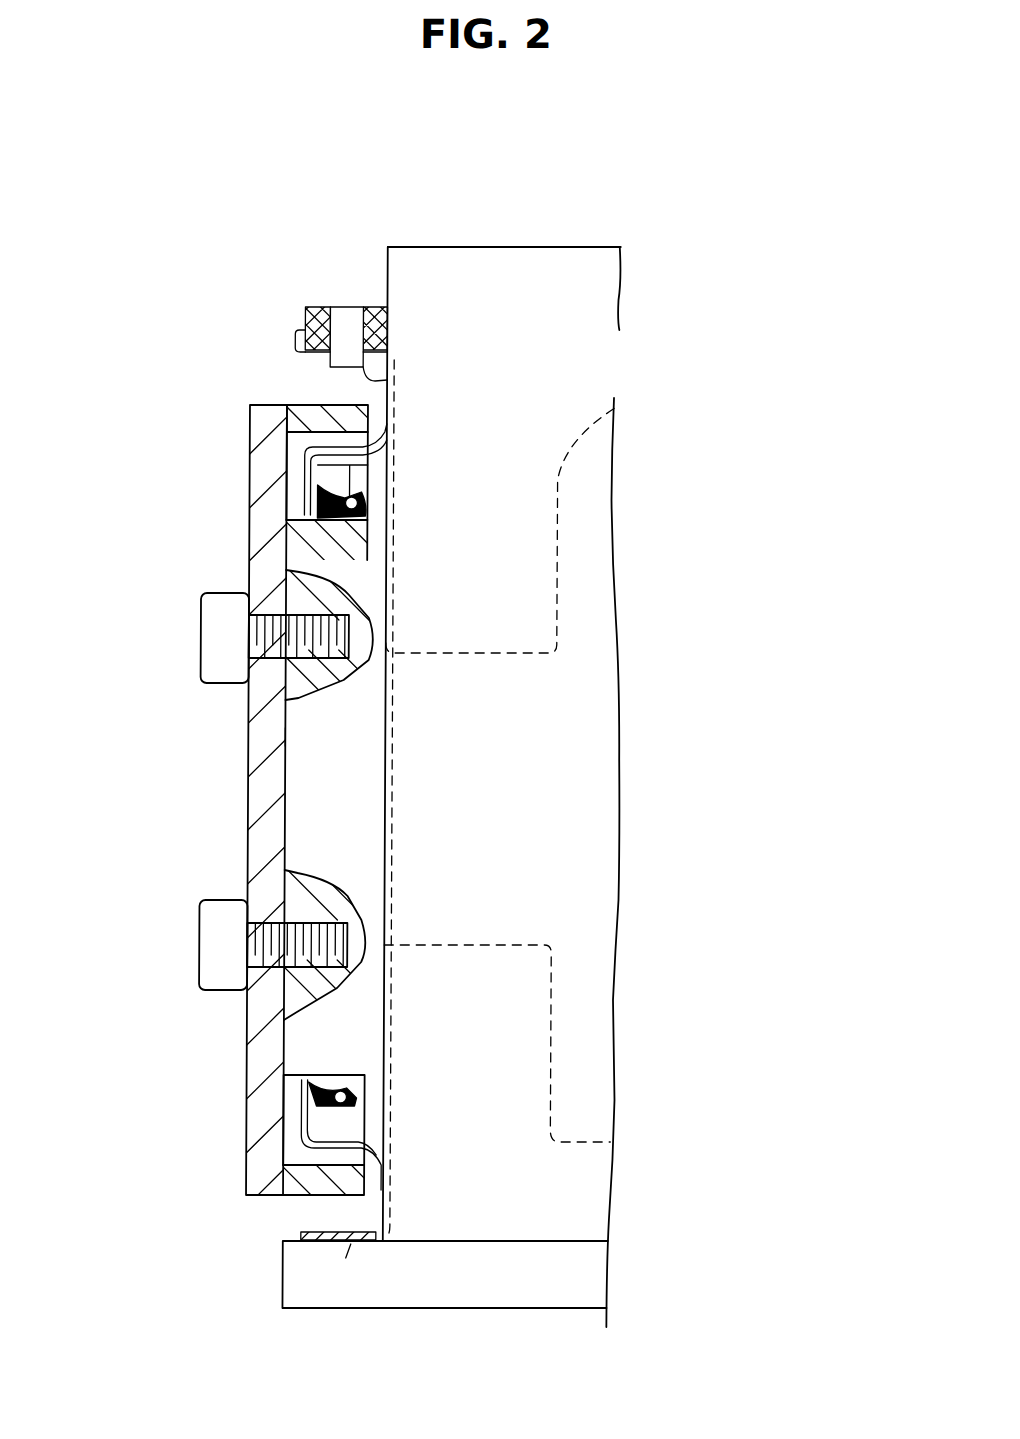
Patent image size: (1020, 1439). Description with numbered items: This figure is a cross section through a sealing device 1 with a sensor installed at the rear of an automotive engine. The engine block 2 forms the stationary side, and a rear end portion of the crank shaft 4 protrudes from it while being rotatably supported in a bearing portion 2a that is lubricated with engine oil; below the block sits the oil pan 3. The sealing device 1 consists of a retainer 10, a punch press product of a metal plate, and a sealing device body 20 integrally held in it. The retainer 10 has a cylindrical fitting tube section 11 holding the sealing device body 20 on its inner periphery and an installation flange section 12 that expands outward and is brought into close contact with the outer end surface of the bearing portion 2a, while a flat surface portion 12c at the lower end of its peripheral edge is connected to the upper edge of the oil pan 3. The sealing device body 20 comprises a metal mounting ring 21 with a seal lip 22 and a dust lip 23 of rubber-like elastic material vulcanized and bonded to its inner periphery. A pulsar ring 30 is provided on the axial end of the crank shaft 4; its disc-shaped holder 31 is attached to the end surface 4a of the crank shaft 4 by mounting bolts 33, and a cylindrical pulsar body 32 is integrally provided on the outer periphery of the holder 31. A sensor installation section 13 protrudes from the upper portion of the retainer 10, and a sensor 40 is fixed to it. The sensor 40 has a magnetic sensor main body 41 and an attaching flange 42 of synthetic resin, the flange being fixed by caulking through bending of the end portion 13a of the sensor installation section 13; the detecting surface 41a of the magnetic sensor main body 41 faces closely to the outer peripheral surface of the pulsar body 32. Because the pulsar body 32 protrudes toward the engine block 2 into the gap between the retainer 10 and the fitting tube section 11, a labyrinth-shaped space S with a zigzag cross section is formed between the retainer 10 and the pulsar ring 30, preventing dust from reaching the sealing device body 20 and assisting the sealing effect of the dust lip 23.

The sealing device 1 is at (292, 493).
The engine block 2 is at (560, 307).
The bearing portion 2a is at (480, 655).
The oil pan 3 is at (322, 1268).
The crank shaft 4 is at (266, 857).
The end surface 4a is at (221, 723).
The retainer 10 is at (357, 1241).
The fitting tube section 11 is at (366, 425).
The installation flange section 12 is at (394, 398).
The flat surface portion 12c is at (340, 1232).
The sensor installation section 13 is at (277, 319).
The end portion 13a is at (300, 338).
The sealing device body 20 is at (374, 1094).
The mounting ring 21 is at (407, 491).
The seal lip 22 is at (345, 520).
The dust lip 23 is at (310, 520).
The pulsar ring 30 is at (228, 786).
The holder 31 is at (258, 510).
The pulsar body 32 is at (317, 408).
The mounting bolts 33 is at (215, 634).
The sensor 40 is at (339, 277).
The magnetic sensor main body 41 is at (345, 320).
The detecting surface 41a is at (424, 346).
The attaching flange 42 is at (307, 315).
The labyrinth-shaped space S is at (290, 1148).